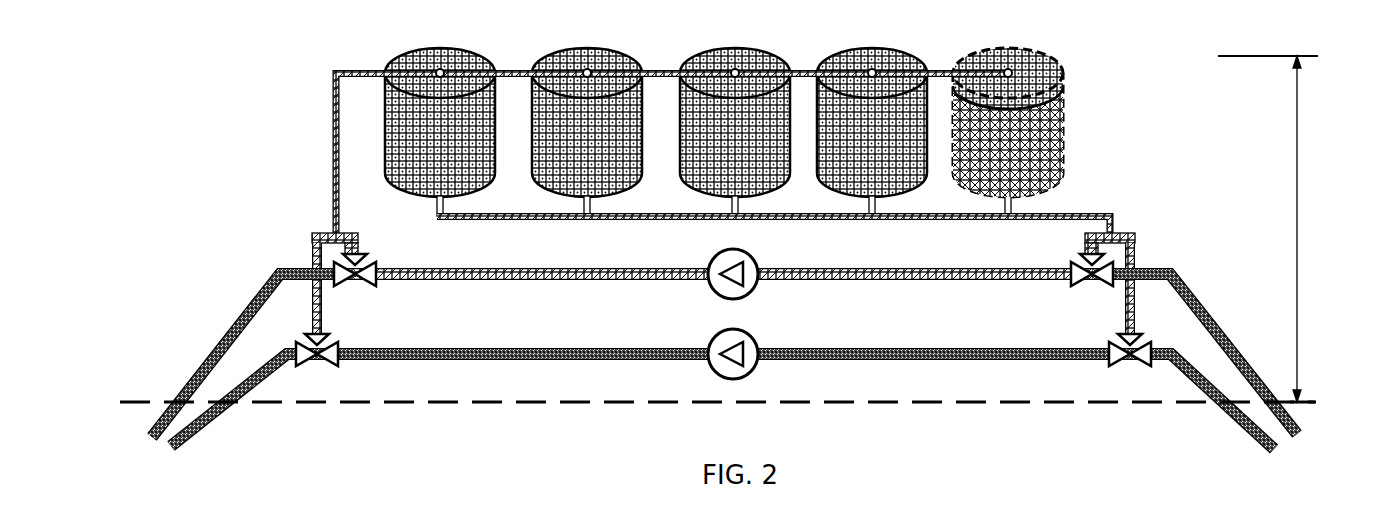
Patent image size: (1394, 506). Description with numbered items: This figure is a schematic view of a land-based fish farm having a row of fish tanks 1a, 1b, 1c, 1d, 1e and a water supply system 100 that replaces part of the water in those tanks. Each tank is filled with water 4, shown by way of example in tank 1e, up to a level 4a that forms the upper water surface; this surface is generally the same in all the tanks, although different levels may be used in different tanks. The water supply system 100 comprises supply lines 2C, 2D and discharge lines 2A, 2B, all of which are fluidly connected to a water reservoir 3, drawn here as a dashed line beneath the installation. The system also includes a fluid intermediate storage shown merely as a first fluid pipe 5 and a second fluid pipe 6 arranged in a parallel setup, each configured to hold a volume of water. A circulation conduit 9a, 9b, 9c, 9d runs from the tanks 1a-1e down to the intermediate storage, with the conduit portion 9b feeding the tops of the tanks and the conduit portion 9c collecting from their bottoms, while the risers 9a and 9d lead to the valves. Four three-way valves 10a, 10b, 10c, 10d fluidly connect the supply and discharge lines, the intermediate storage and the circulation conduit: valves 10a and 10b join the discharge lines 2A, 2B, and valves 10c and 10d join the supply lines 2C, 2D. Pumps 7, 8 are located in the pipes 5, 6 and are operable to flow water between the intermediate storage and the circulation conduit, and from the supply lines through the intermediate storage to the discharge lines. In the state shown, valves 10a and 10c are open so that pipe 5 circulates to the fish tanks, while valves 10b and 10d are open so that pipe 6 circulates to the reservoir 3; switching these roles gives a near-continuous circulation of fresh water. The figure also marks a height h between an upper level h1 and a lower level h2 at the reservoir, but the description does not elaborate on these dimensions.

The land-based fish tank 1a is at (416, 49).
The land-based fish tank 1b is at (562, 50).
The land-based fish tank 1c is at (703, 52).
The land-based fish tank 1d is at (846, 49).
The land-based fish tank 1e is at (980, 50).
The discharge line 2A is at (266, 286).
The discharge line 2B is at (252, 397).
The supply line 2C is at (1203, 304).
The supply line 2D is at (1176, 350).
The water reservoir 3 is at (712, 440).
The water 4 is at (1000, 158).
The upper water surface 4a is at (1040, 98).
The first fluid pipe 5 is at (588, 268).
The second fluid pipe 6 is at (598, 348).
The pump 7 is at (755, 262).
The pump 8 is at (752, 340).
The circulation conduit 9a is at (312, 250).
The circulation conduit 9b is at (343, 70).
The circulation conduit 9c is at (1080, 212).
The circulation conduit 9d is at (1135, 246).
The three-way valve 10a is at (378, 286).
The three-way valve 10b is at (338, 364).
The three-way valve 10c is at (1080, 286).
The three-way valve 10d is at (1109, 362).
The water supply system 100 is at (1128, 138).
The height h is at (1306, 229).
The upper height level h1 is at (1280, 56).
The lower height level h2 is at (1300, 400).